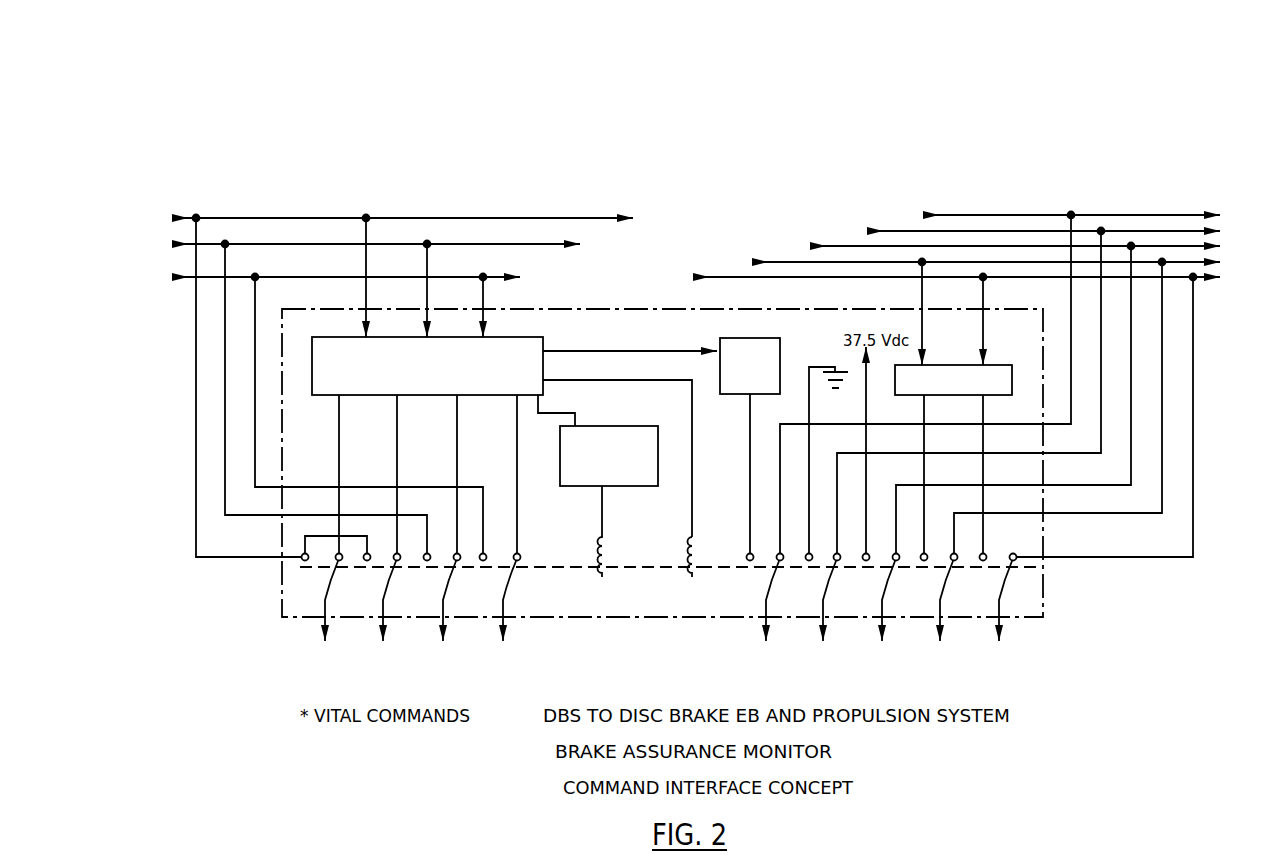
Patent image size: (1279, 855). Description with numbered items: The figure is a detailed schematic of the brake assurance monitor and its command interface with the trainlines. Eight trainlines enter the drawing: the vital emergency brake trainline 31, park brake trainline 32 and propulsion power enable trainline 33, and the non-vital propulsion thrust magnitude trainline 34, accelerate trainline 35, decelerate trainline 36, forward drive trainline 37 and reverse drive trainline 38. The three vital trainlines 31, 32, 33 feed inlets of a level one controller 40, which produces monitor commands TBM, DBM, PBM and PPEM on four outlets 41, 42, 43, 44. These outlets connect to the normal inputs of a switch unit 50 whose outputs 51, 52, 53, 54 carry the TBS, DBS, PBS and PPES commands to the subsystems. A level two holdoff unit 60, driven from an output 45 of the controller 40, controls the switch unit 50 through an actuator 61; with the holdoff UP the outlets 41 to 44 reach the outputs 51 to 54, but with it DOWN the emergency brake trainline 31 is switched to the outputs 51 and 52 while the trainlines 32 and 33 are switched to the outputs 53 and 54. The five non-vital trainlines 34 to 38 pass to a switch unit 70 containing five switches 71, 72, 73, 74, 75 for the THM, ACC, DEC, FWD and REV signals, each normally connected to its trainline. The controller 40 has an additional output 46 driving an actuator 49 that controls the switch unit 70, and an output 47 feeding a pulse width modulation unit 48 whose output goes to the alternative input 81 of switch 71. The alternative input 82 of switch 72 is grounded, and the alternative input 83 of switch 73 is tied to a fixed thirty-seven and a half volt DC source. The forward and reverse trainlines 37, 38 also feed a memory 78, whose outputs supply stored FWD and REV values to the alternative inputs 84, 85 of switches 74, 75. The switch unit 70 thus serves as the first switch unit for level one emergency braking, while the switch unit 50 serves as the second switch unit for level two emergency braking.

The emergency brake trainline 31 is at (247, 217).
The park brake trainline 32 is at (275, 244).
The propulsion power enable trainline 33 is at (301, 276).
The propulsion thrust magnitude trainline 34 is at (1014, 379).
The accelerate trainline 35 is at (1226, 229).
The decelerate trainline 36 is at (1009, 395).
The forward drive trainline 37 is at (1226, 260).
The reverse drive trainline 38 is at (952, 412).
The controller 40 is at (522, 345).
The outlet for TBM command 41 is at (344, 435).
The outlet for DBM command 42 is at (402, 435).
The outlet for PBM command 43 is at (462, 435).
The outlet for PPEM command 44 is at (514, 424).
The output of the controller 45 is at (541, 414).
The additional output of the controller 46 is at (587, 380).
The output of the controller 47 is at (587, 351).
The pulse width modulation unit 48 is at (775, 349).
The actuator 49 is at (696, 552).
The switch unit 50 is at (520, 536).
The output of the switch unit 51 is at (330, 573).
The output of the switch unit 52 is at (388, 573).
The output of the switch unit 53 is at (448, 573).
The output of the switch unit 54 is at (508, 573).
The level 2 holdoff unit 60 is at (620, 486).
The actuator 61 is at (608, 565).
The switch unit 70 is at (1022, 567).
The switch for THM signal 71 is at (771, 573).
The switch for ACC signal 72 is at (828, 573).
The switch for DEC signal 73 is at (887, 573).
The switch for FWD signal 74 is at (945, 573).
The switch for REV signal 75 is at (1003, 573).
The memory 78 is at (1000, 391).
The alternative input 81 is at (751, 525).
The alternative input 82 is at (810, 525).
The alternative input 83 is at (864, 525).
The alternative input 84 is at (922, 525).
The alternative input 85 is at (985, 525).